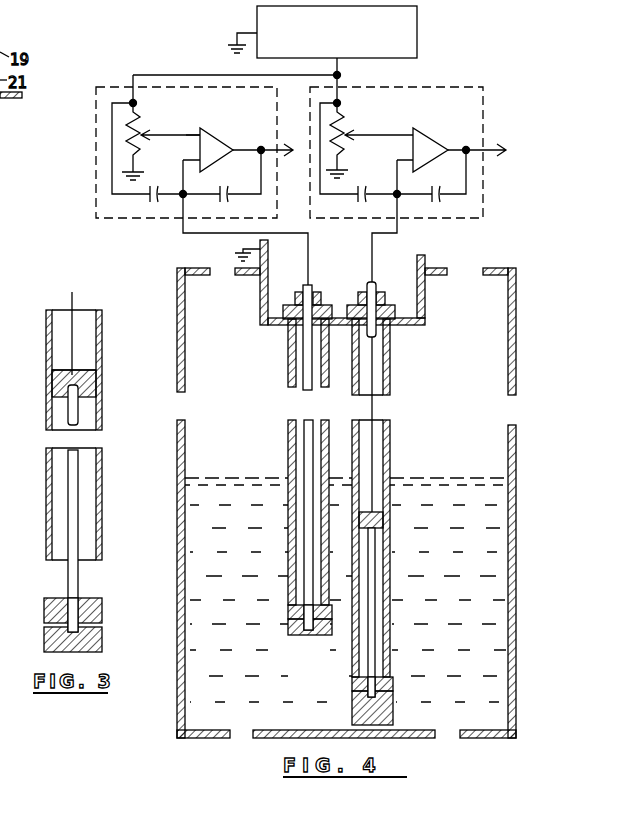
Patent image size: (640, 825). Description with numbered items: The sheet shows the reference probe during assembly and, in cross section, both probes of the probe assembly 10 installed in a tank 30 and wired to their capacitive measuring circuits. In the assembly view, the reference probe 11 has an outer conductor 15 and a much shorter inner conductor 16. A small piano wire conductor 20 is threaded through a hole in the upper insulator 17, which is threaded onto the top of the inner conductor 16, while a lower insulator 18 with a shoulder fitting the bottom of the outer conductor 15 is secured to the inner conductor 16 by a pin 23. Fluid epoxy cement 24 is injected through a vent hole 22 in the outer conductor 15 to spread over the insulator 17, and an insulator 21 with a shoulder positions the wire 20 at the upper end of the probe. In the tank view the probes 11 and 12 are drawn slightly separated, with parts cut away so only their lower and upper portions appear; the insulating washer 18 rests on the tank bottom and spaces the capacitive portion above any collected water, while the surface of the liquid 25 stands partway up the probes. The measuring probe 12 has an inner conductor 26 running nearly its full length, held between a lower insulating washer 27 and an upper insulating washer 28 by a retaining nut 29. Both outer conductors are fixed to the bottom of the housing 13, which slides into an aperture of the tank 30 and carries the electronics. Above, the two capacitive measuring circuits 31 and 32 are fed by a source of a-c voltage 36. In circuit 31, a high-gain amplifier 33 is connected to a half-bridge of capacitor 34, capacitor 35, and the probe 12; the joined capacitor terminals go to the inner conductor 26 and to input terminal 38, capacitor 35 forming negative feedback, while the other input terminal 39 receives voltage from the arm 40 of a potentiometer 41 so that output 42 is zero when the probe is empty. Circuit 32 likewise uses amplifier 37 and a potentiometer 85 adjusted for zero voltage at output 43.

In FIG. 4, the probe assembly 10 is at (338, 490).
In FIG. 3, the reference probe 11 is at (40, 407).
In FIG. 4, the reference probe 11 is at (398, 498).
In FIG. 4, the main or measuring probe 12 is at (290, 442).
In FIG. 4, the housing 13 is at (425, 258).
In FIG. 3, the outer conductor 15 is at (103, 493).
In FIG. 4, the outer conductor 15 is at (391, 469).
In FIG. 3, the inner conductor 16 is at (80, 580).
In FIG. 4, the inner conductor 16 is at (376, 616).
In FIG. 3, the insulator 17 is at (80, 392).
In FIG. 3, the lower insulator 18 is at (104, 638).
In FIG. 4, the lower insulator 18 is at (394, 702).
In FIG. 3, the conductor 20 is at (75, 302).
In FIG. 4, the conductor 20 is at (374, 437).
In FIG. 4, the insulator 21 is at (385, 302).
In FIG. 3, the vent hole 22 is at (100, 372).
In FIG. 4, the vent hole 22 is at (371, 520).
In FIG. 3, the pin 23 is at (104, 620).
In FIG. 3, the epoxy cement 24 is at (86, 368).
In FIG. 4, the liquid surface 25 is at (289, 465).
In FIG. 4, the inner conductor 26 is at (297, 432).
In FIG. 4, the lower insulating washer 27 is at (290, 612).
In FIG. 4, the upper insulating washer 28 is at (284, 303).
In FIG. 4, the retaining nut 29 is at (318, 290).
In FIG. 4, the tank 30 is at (194, 267).
In FIG. 4, the capacitive measuring circuit 31 is at (96, 120).
In FIG. 4, the capacitive measuring circuit 32 is at (483, 98).
In FIG. 4, the high-gain amplifier 33 is at (222, 142).
In FIG. 4, the capacitor 34 is at (151, 198).
In FIG. 4, the capacitor 35 is at (222, 198).
In FIG. 4, the source of a-c voltage 36 is at (417, 31).
In FIG. 4, the high-gain amplifier 37 is at (438, 141).
In FIG. 4, the terminal 38 is at (198, 159).
In FIG. 4, the terminal 39 is at (196, 132).
In FIG. 4, the arm 40 is at (147, 134).
In FIG. 4, the potentiometer 41 is at (138, 151).
In FIG. 4, the output 42 is at (278, 148).
In FIG. 4, the output 43 is at (496, 153).
In FIG. 4, the potentiometer 85 is at (343, 150).